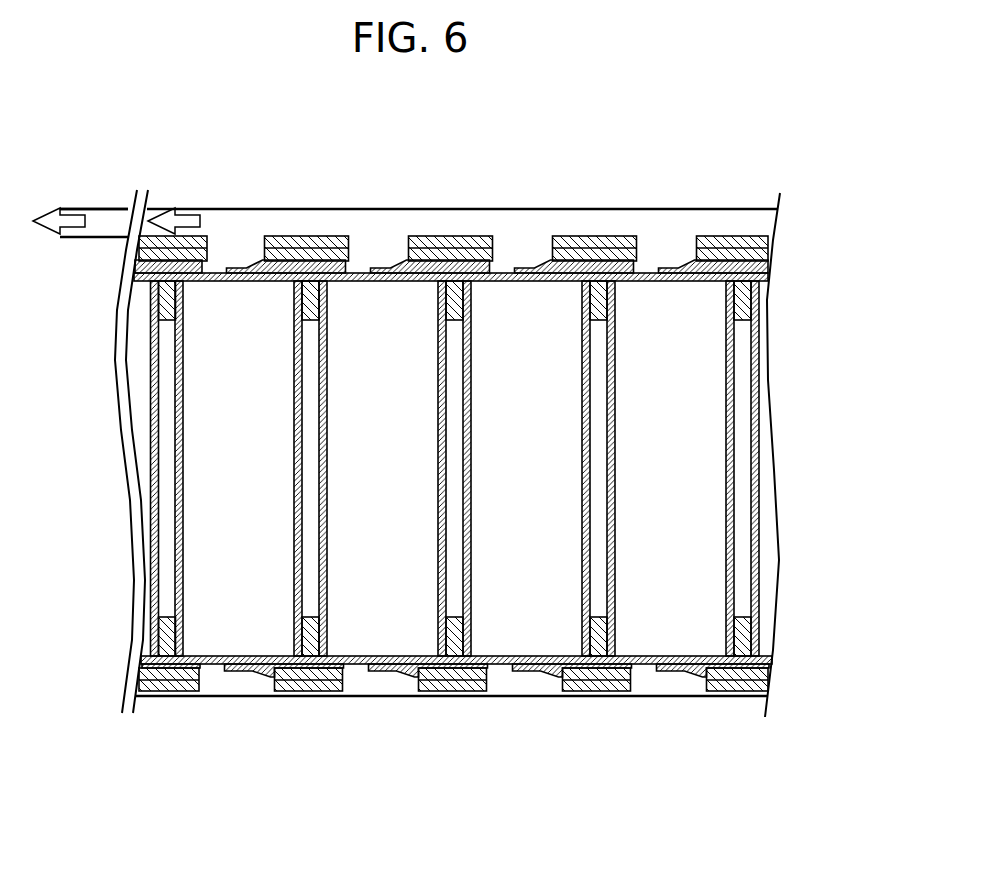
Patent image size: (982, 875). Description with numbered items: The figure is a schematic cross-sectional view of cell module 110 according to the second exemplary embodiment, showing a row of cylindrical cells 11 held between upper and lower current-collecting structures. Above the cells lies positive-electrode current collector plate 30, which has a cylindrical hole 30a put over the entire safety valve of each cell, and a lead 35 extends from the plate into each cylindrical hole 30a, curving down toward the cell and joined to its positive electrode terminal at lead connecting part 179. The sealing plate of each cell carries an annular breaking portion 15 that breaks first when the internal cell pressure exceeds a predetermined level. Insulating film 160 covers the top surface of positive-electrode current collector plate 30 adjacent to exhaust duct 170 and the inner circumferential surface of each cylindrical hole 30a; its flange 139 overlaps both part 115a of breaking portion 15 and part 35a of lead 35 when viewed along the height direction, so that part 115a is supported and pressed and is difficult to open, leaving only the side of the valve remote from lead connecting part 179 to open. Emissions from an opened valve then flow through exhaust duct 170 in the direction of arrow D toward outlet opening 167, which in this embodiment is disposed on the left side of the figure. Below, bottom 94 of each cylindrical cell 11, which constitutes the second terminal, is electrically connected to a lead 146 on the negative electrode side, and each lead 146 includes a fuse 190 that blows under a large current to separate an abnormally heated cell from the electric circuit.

The cell module 110 is at (435, 420).
The cylindrical cell 11 is at (454, 468).
The breaking portion 15 is at (397, 284).
The outlet opening 167 is at (52, 204).
The arrow D is at (70, 221).
The exhaust duct 170 is at (300, 224).
The insulating film 160 is at (452, 233).
The flange 139 is at (546, 243).
The positive-electrode current collector plate 30 is at (737, 256).
The cylindrical hole 30a is at (698, 256).
The lead 35 is at (233, 261).
The part of lead 35a is at (697, 281).
The part of breaking portion 115a is at (538, 281).
The lead connecting part 179 is at (263, 283).
The fuse 190 is at (263, 674).
The bottom of cylindrical cell 94 is at (377, 673).
The lead on negative electrode side 146 is at (525, 666).